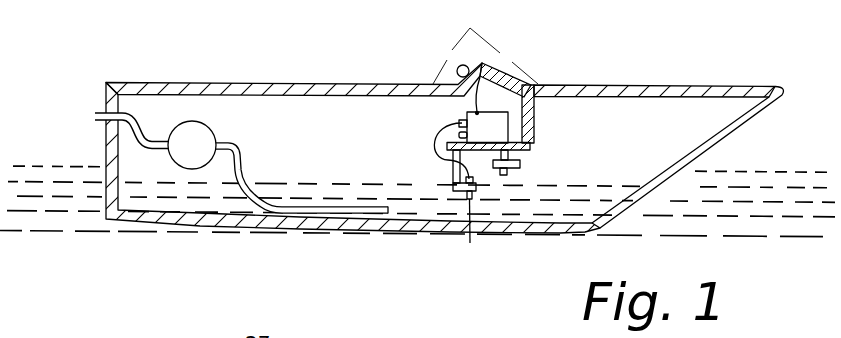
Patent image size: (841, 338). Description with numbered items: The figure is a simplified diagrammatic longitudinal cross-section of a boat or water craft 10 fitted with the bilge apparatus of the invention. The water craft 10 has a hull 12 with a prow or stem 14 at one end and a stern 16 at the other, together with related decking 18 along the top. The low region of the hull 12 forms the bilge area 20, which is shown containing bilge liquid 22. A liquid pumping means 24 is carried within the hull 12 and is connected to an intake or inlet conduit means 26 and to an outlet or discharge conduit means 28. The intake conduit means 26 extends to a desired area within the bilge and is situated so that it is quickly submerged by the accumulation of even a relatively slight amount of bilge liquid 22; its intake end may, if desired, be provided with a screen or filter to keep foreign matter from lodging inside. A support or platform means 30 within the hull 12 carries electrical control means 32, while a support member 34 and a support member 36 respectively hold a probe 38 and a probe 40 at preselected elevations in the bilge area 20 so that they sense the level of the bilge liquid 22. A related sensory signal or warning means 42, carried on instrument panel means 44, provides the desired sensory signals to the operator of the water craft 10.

The water craft 10 is at (440, 147).
The hull 12 is at (758, 128).
The prow 14 is at (720, 145).
The stern 16 is at (107, 137).
The decking 18 is at (693, 87).
The bilge area 20 is at (420, 210).
The bilge liquid 22 is at (644, 161).
The liquid pumping means 24 is at (212, 133).
The intake conduit means 26 is at (325, 205).
The discharge conduit means 28 is at (97, 112).
The support or platform means 30 is at (531, 150).
The electrical control means 32 is at (498, 112).
The support member 34 is at (453, 176).
The support member 36 is at (521, 166).
The probe 38 is at (471, 232).
The probe 40 is at (508, 173).
The sensory signal or warning means 42 is at (463, 65).
The instrument panel means 44 is at (473, 62).